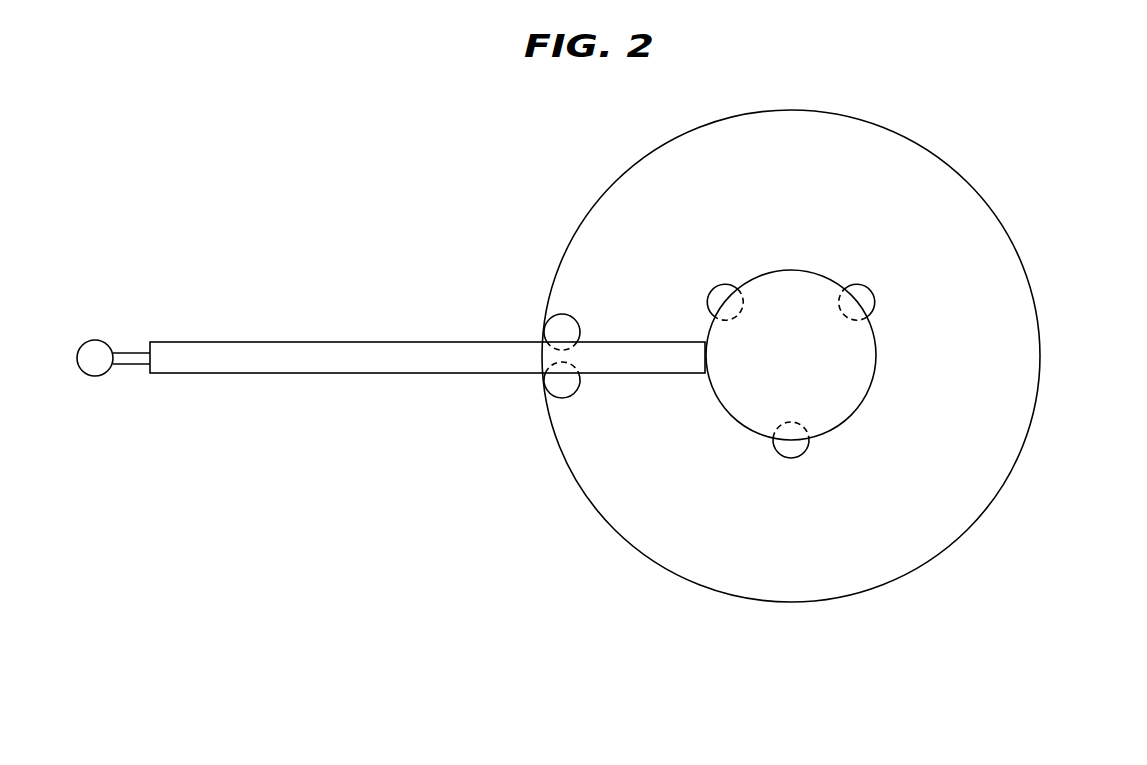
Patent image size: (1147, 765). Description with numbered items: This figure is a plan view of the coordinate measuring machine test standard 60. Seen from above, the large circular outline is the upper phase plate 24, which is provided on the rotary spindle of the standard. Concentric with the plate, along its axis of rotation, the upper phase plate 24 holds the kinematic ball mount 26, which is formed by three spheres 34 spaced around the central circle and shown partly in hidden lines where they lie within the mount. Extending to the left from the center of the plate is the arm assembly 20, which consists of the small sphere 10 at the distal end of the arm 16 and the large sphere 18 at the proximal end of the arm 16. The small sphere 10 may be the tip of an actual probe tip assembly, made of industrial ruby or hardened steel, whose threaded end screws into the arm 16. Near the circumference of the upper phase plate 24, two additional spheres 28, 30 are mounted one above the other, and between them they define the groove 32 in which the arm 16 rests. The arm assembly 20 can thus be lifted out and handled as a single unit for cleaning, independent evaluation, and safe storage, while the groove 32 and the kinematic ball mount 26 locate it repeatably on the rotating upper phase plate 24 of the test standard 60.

The small sphere 10 is at (95, 350).
The arm 16 is at (335, 345).
The large sphere 18 is at (797, 270).
The arm assembly 20 is at (205, 326).
The upper phase plate 24 is at (1025, 391).
The kinematic ball mount 26 is at (882, 297).
The sphere 28 is at (558, 303).
The sphere 30 is at (545, 392).
The groove 32 is at (560, 412).
The spheres 34 is at (712, 285).
The coordinate measuring machine test standard 60 is at (1118, 84).